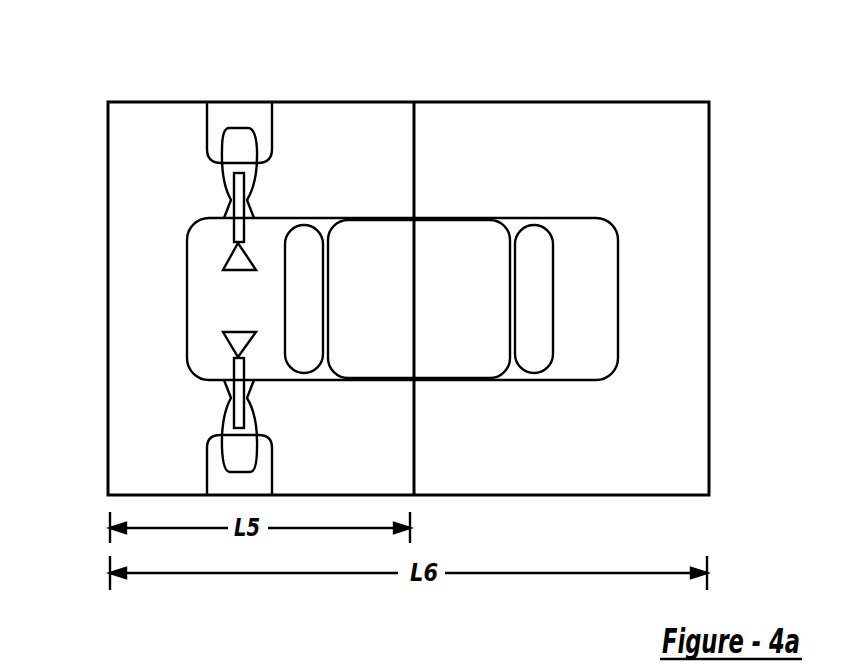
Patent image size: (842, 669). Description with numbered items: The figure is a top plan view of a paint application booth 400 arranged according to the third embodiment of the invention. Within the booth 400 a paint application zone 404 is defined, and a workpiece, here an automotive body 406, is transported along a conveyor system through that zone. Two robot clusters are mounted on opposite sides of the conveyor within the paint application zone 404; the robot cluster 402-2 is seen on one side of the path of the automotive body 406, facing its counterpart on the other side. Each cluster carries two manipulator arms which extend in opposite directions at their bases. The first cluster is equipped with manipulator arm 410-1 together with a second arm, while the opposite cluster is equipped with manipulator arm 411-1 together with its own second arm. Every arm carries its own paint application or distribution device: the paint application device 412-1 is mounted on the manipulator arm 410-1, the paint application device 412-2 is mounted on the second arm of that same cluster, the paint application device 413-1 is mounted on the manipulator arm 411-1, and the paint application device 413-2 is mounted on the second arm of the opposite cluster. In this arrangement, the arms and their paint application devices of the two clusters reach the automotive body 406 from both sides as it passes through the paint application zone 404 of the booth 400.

The booth 400 is at (135, 100).
The robot cluster 402-2 is at (270, 143).
The paint application zone 404 is at (133, 430).
The automotive body 406 is at (197, 345).
The manipulator arm 410-1 is at (233, 228).
The manipulator arm 411-1 is at (304, 399).
The paint application device 412-1 is at (243, 272).
The paint application device 412-2 is at (246, 214).
The paint application device 413-1 is at (252, 338).
The paint application device 413-2 is at (246, 388).